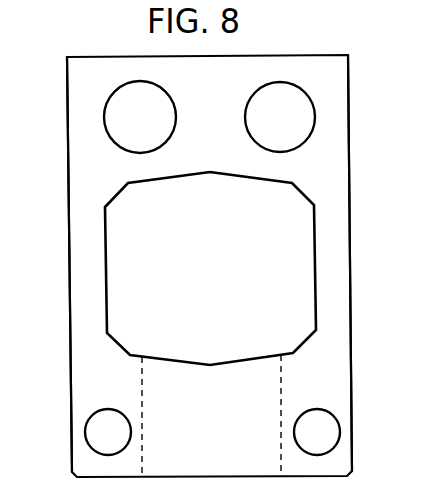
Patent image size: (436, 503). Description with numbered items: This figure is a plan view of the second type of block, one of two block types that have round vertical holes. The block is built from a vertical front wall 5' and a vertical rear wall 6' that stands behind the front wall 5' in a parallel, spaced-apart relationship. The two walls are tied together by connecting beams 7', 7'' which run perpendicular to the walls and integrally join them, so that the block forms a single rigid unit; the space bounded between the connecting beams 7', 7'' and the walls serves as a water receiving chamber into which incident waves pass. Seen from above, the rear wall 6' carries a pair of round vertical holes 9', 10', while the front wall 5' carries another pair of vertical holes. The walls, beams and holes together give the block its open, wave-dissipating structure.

The vertical rear wall 6' is at (209, 245).
The connecting beam 7' is at (58, 264).
The connecting beam 7'' is at (369, 263).
The vertical hole 9' is at (103, 117).
The vertical hole 10' is at (327, 117).
The vertical front wall 5' is at (346, 432).